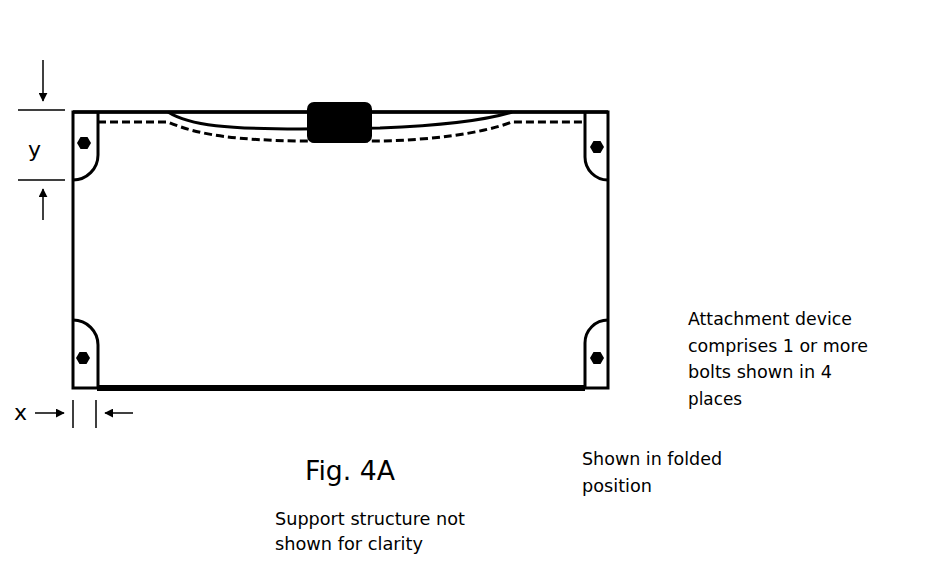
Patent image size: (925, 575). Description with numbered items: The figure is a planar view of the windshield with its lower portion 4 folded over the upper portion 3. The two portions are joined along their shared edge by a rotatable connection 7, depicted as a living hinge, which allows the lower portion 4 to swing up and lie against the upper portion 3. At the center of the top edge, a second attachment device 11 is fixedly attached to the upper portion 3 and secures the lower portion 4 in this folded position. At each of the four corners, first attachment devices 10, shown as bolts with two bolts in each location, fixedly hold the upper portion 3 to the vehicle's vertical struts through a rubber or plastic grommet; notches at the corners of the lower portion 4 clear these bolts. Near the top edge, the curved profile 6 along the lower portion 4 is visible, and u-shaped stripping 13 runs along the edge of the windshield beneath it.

The upper portion of the windshield 3 is at (226, 104).
The lower portion of the windshield 4 is at (358, 283).
The curved profile along the lower portion of the windshield 6 is at (453, 117).
The rotatable connection 7 is at (228, 401).
The first attachment device 10 is at (614, 342).
The second attachment device 11 is at (346, 97).
The u-shaped stripping 13 is at (491, 141).